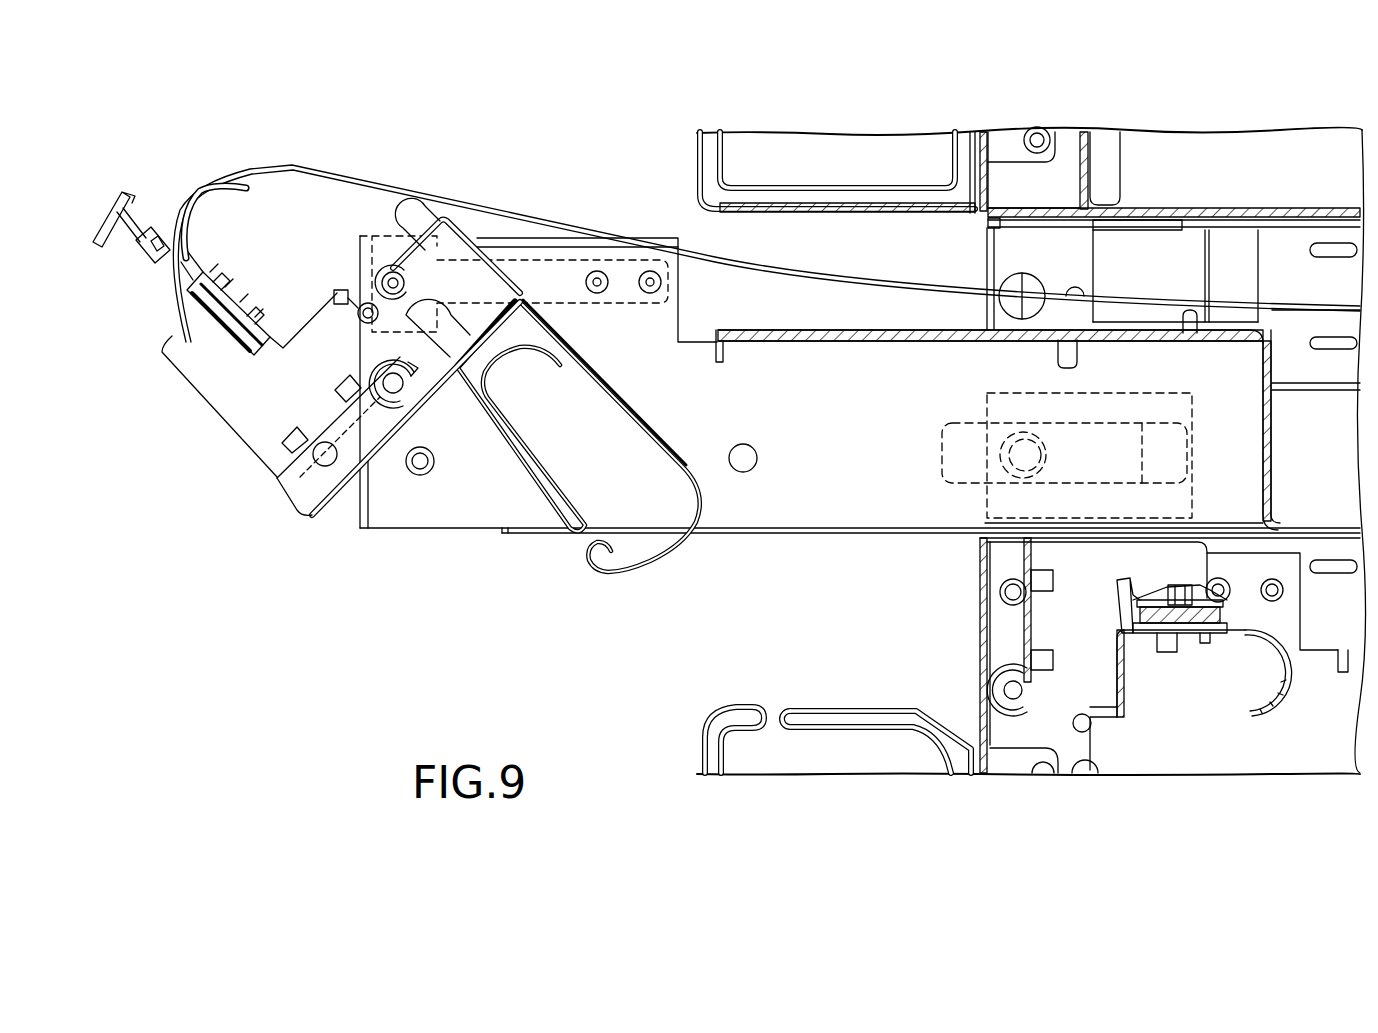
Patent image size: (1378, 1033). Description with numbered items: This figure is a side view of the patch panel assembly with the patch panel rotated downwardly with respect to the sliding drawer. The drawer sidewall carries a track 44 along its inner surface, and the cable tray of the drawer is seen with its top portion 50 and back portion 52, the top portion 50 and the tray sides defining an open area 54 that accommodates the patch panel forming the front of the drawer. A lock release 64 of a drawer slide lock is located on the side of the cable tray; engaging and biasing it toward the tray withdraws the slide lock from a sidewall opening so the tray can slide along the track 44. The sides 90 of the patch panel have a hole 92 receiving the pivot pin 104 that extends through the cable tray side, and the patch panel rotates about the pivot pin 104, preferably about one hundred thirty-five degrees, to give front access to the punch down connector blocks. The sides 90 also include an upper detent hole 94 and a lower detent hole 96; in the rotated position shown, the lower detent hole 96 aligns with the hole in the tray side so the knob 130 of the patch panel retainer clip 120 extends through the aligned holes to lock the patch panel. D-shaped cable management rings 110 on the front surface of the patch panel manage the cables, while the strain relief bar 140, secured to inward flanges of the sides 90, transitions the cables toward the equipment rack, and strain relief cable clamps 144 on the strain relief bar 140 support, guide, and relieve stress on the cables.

The track 44 is at (1313, 397).
The top portion 50 is at (793, 330).
The back portion 52 is at (1273, 367).
The open area 54 is at (690, 333).
The lock release 64 is at (950, 457).
The sides of the patch panel 90 is at (238, 408).
The hole 92 is at (443, 408).
The upper detent hole 94 is at (297, 500).
The lower detent hole 96 is at (383, 273).
The pivot pin 104 is at (395, 390).
The D-shaped cable management ring 110 is at (625, 562).
The patch panel retainer clip 120 is at (550, 268).
The knob 130 is at (463, 240).
The strain relief bar 140 is at (219, 190).
The strain relief cable clamp 144 is at (150, 223).